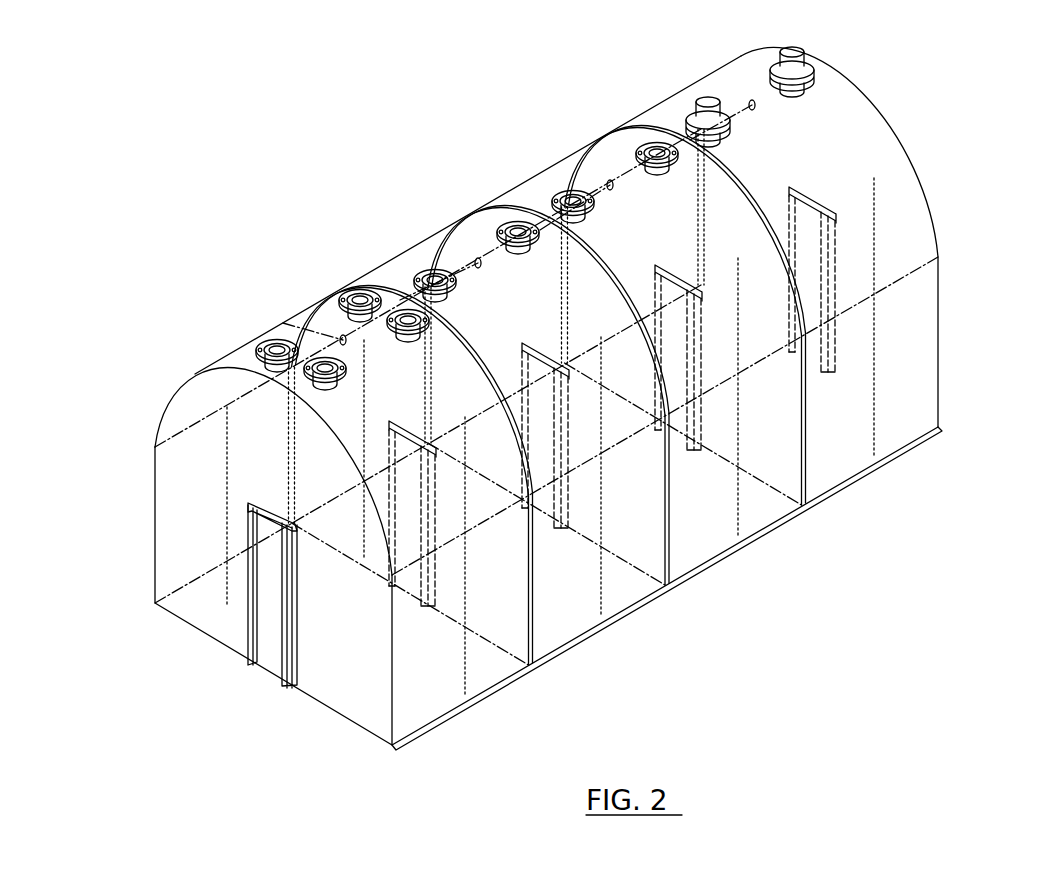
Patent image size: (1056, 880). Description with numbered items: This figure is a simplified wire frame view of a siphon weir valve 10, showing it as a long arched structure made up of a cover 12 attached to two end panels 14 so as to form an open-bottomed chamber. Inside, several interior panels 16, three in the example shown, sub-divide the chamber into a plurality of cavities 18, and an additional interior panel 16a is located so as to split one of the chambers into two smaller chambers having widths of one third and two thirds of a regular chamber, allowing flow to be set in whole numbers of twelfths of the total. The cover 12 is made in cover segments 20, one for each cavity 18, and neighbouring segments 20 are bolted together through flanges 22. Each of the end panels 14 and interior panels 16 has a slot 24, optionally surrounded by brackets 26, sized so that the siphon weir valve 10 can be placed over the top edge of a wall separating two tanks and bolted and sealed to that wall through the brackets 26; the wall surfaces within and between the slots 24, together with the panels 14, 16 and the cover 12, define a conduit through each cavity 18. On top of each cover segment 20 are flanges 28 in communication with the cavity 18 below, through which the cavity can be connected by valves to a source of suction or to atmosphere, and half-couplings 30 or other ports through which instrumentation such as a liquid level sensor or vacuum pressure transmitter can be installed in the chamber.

The siphon weir valve 10 is at (962, 94).
The cover 12 is at (913, 350).
The end panels 14 is at (928, 217).
The interior panels 16 is at (507, 633).
The additional interior panel 16a is at (420, 697).
The cavities 18 is at (722, 532).
The cover segments 20 is at (848, 117).
The flanges 22 is at (342, 291).
The slot 24 is at (270, 663).
The brackets 26 is at (293, 627).
The flanges 28 is at (477, 257).
The half-couplings 30 is at (422, 245).